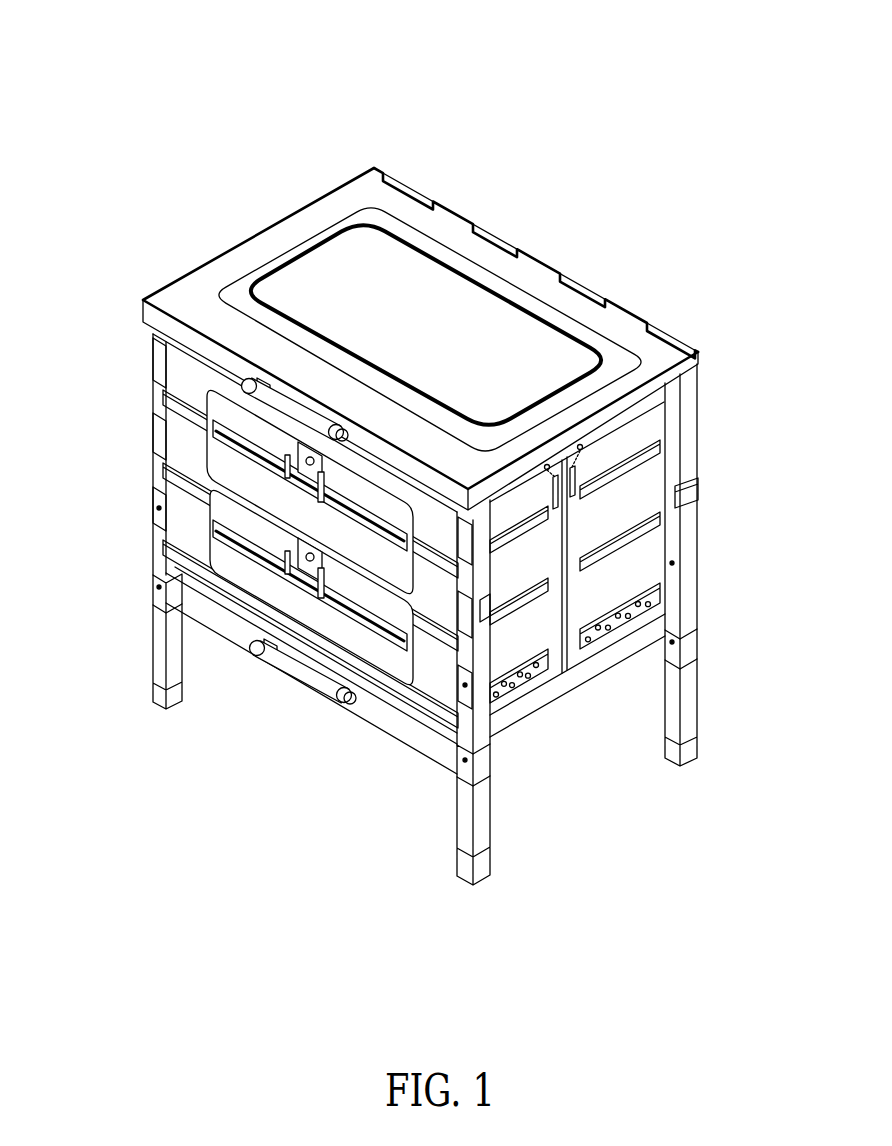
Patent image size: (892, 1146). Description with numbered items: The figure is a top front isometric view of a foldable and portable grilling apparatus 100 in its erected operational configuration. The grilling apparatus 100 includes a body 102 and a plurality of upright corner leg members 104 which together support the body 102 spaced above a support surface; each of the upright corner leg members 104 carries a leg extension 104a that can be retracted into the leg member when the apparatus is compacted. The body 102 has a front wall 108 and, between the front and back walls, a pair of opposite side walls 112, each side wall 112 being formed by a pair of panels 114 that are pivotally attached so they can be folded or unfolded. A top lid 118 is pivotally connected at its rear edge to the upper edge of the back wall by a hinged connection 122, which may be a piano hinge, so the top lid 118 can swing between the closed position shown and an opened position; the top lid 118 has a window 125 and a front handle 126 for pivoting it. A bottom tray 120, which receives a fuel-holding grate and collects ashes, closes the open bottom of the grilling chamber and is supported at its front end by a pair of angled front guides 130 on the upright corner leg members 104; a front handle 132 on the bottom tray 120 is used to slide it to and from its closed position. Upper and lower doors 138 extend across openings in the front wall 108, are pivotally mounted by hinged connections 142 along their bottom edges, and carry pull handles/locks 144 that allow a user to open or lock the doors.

The foldable and portable grilling apparatus 100 is at (702, 71).
The body 102 is at (669, 424).
The upright corner leg members 104 is at (152, 497).
The leg extensions 104a is at (152, 667).
The front wall 108 is at (178, 526).
The side walls 112 is at (574, 660).
The panels 114 is at (537, 651).
The top lid 118 is at (336, 184).
The bottom tray 120 is at (379, 724).
The hinged connection 122 is at (396, 161).
The window 125 is at (384, 295).
The front handle 126 is at (308, 418).
The angled front guides 130 is at (163, 607).
The front handle 132 is at (295, 673).
The upper and lower doors 138 is at (218, 500).
The hinged connections 142 is at (338, 560).
The pull handles/locks 144 is at (338, 492).